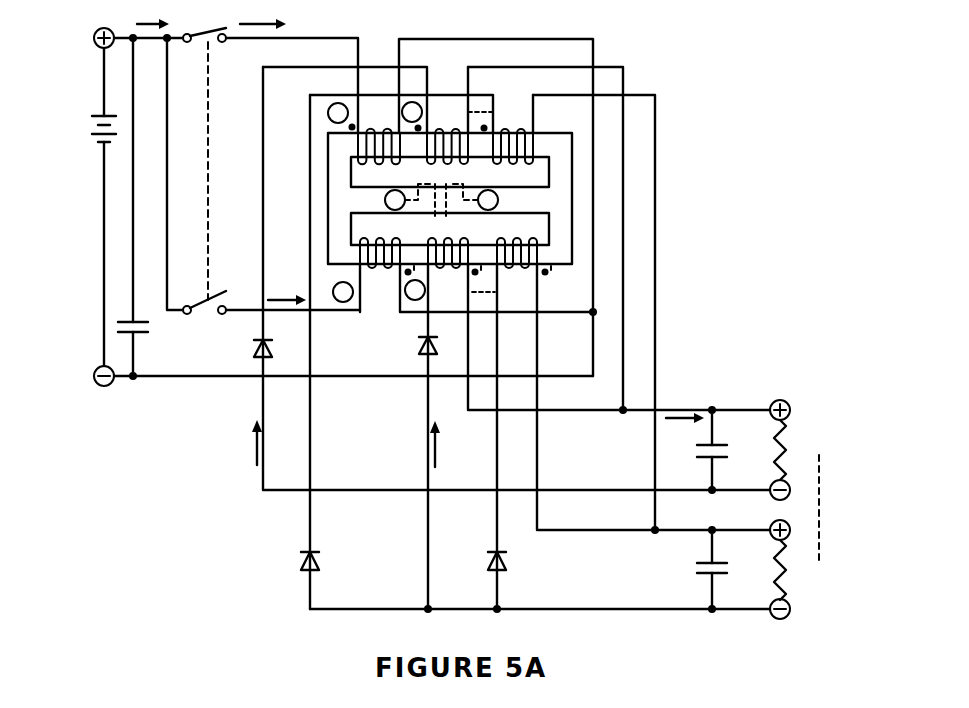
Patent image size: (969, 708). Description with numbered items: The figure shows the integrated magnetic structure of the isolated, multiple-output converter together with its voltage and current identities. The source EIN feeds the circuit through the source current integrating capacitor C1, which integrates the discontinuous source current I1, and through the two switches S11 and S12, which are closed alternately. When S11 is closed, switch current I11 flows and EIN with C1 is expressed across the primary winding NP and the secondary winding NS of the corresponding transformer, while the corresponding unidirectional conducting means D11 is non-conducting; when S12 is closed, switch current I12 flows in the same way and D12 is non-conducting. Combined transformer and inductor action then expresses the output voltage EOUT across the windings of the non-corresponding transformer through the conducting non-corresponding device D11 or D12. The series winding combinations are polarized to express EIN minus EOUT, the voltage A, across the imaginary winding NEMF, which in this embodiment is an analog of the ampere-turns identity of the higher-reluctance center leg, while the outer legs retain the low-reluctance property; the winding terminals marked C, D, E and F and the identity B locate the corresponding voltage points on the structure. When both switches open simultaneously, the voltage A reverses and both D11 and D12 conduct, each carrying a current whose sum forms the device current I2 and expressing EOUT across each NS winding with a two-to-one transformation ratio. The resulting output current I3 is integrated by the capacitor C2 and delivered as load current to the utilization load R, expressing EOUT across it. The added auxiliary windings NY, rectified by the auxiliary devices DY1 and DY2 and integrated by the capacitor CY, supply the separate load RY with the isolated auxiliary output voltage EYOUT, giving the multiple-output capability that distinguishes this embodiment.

The source voltage EIN is at (67, 207).
The switch S11 is at (204, 22).
The switch S12 is at (205, 315).
The source current I1 is at (152, 15).
The switch current I11 is at (262, 15).
The switch current I12 is at (287, 291).
The unidirectional conducting means current I2 is at (291, 447).
The output current I3 is at (685, 428).
The source current integrating capacitor C1 is at (146, 328).
The capacitor C2 is at (698, 455).
The auxiliary output capacitor CY is at (697, 572).
The unidirectional conducting means D11 is at (283, 349).
The unidirectional conducting means D12 is at (409, 348).
The auxiliary unidirectional conducting means DY1 is at (331, 563).
The auxiliary unidirectional conducting means DY2 is at (516, 563).
The utilization load R is at (754, 450).
The auxiliary utilization load RY is at (753, 573).
The output voltage EOUT is at (807, 450).
The auxiliary output voltage EYOUT is at (810, 569).
The primary winding NP is at (379, 204).
The secondary winding NS is at (447, 204).
The auxiliary winding NY is at (502, 204).
The imaginary winding NEMF is at (450, 198).
The voltage A is at (395, 200).
The voltage identity B is at (488, 200).
The voltage identity C is at (342, 117).
The voltage identity D is at (445, 117).
The source current E is at (343, 292).
The summed current F is at (478, 283).